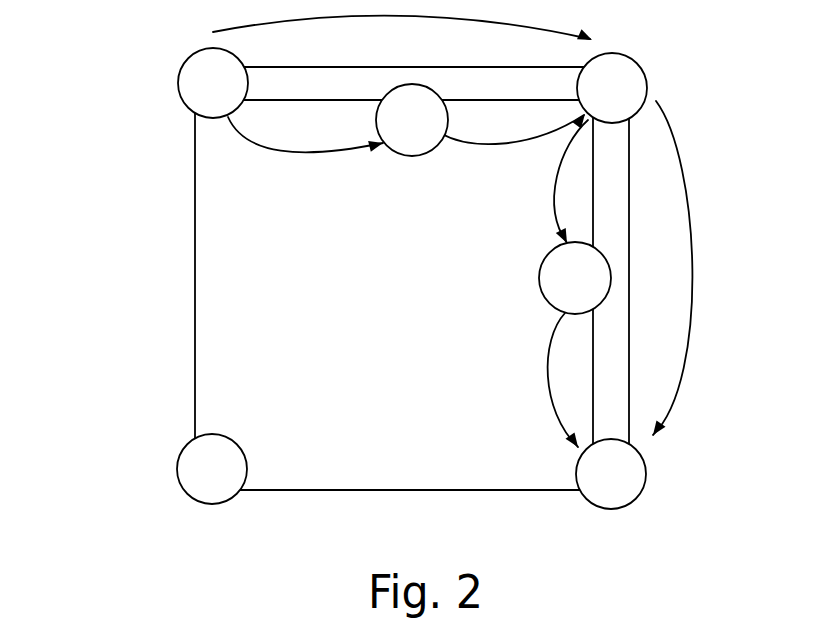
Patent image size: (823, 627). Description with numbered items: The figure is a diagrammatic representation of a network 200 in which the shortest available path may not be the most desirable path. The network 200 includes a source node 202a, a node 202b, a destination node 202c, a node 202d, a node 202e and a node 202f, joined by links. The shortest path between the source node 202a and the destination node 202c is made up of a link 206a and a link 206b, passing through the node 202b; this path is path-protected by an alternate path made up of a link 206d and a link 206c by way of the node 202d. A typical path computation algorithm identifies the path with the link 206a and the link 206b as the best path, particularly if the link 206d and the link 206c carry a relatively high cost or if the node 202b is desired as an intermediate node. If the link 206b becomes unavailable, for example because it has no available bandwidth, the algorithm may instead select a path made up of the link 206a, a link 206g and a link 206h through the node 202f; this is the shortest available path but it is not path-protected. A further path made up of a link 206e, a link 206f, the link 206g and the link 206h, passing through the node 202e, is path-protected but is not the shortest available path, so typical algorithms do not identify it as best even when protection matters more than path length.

The network 200 is at (108, 546).
The source node 202a is at (237, 52).
The node 202b is at (640, 62).
The destination node 202c is at (620, 510).
The node 202d is at (245, 449).
The node 202e is at (408, 156).
The node 202f is at (538, 279).
The link 206a is at (387, 66).
The link 206b is at (629, 247).
The link 206c is at (502, 492).
The link 206d is at (195, 320).
The link 206e is at (285, 103).
The link 206f is at (490, 105).
The link 206g is at (592, 204).
The link 206h is at (592, 381).